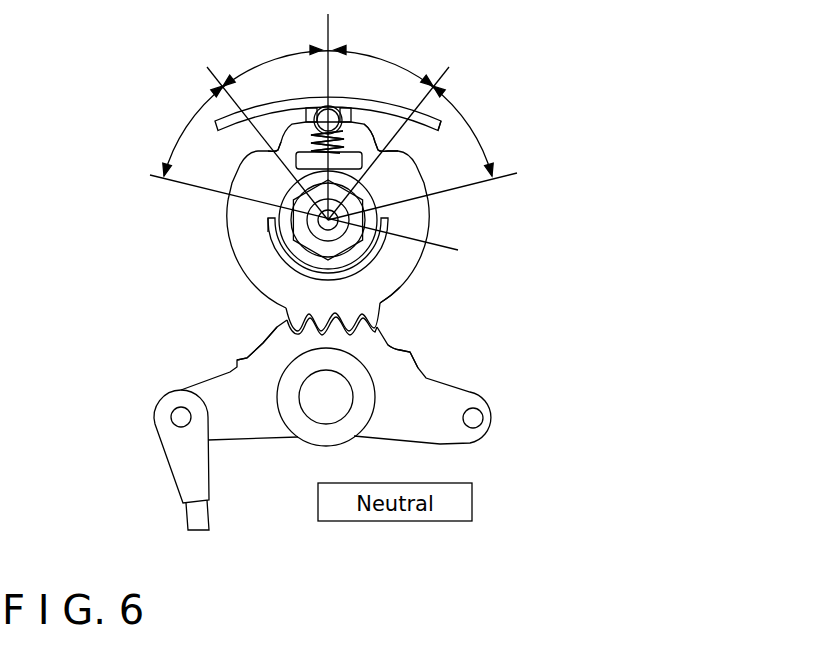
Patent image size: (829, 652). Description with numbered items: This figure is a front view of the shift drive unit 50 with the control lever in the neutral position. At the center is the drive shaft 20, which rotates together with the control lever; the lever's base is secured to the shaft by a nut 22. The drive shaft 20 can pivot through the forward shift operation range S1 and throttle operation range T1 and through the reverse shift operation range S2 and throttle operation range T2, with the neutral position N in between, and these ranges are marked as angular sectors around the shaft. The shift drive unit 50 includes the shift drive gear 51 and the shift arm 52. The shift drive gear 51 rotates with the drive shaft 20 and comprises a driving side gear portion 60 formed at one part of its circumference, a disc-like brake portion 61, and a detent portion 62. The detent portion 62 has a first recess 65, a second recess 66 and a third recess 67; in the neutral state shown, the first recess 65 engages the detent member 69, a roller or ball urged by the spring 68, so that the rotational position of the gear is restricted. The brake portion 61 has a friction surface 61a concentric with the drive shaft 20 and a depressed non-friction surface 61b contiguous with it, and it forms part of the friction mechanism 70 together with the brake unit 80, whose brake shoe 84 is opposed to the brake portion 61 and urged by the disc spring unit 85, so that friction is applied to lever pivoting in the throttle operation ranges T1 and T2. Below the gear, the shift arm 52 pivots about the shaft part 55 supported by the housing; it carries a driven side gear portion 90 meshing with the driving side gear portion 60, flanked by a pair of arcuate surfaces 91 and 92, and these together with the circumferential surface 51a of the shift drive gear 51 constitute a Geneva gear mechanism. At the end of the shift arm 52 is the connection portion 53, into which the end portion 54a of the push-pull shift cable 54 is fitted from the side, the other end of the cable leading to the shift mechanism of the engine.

The drive shaft 20 is at (309, 230).
The nut 22 is at (343, 243).
The shift drive unit 50 is at (498, 358).
The shift drive gear 51 is at (355, 254).
The circumferential surface 51a is at (400, 288).
The shift arm 52 is at (427, 427).
The connection portion 53 is at (176, 416).
The shift cable 54 is at (193, 515).
The end portion 54a is at (167, 435).
The shaft part 55 is at (312, 437).
The driving side gear portion 60 is at (290, 322).
The brake portion 61 is at (440, 190).
The friction surface 61a is at (390, 222).
The non-friction surface 61b is at (287, 186).
The detent portion 62 is at (358, 113).
The first recess 65 is at (317, 110).
The second recess 66 is at (274, 153).
The third recess 67 is at (385, 147).
The spring 68 is at (430, 110).
The detent member 69 is at (333, 110).
The friction mechanism 70 is at (300, 130).
The brake unit 80 is at (362, 160).
The brake shoe 84 is at (382, 160).
The disc spring unit 85 is at (343, 140).
The driven side gear portion 90 is at (362, 330).
The arcuate surface 91 is at (402, 353).
The arcuate surface 92 is at (263, 345).
The neutral position N is at (328, 110).
The shift operation range S1 is at (398, 63).
The shift operation range S2 is at (258, 63).
The throttle operation range T1 is at (475, 130).
The throttle operation range T2 is at (180, 130).